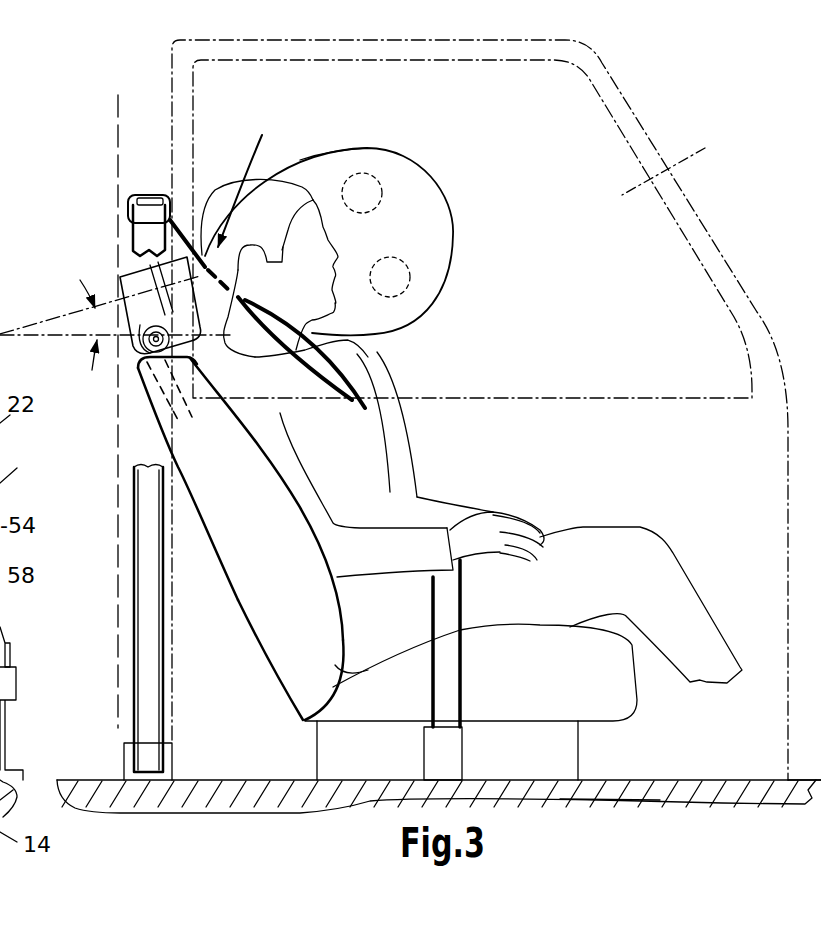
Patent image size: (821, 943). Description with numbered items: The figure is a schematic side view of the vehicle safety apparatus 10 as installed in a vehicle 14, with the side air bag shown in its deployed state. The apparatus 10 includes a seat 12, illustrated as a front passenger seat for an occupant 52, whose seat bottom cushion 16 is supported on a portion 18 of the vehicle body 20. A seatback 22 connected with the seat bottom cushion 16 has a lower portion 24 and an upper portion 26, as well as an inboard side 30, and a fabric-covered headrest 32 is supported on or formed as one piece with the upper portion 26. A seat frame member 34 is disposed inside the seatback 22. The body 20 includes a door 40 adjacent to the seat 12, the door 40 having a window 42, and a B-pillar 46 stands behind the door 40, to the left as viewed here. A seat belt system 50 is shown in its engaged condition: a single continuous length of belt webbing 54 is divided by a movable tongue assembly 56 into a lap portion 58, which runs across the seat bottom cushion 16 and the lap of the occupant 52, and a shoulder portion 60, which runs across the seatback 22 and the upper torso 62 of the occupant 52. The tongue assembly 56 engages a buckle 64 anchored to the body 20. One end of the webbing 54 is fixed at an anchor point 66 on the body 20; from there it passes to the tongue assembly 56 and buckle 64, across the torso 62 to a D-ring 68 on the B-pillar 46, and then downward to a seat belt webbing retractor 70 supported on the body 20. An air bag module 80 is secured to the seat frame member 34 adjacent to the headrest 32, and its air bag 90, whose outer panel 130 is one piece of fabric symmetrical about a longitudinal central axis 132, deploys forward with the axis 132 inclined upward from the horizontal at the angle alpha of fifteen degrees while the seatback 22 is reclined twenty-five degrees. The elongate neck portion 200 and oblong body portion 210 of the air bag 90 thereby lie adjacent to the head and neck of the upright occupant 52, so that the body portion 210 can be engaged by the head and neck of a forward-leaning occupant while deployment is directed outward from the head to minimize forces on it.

The vehicle safety apparatus 10 is at (642, 457).
The seat 12 is at (260, 632).
The vehicle 14 is at (715, 775).
The seat bottom cushion 16 is at (637, 683).
The portion of the vehicle body 18 is at (640, 780).
The vehicle body 20 is at (612, 812).
The seatback 22 is at (238, 600).
The lower portion of the seatback 24 is at (305, 670).
The upper portion of the seatback 26 is at (220, 433).
The inboard side of the seatback 30 is at (16, 463).
The headrest 32 is at (133, 260).
The seat frame member 34 is at (150, 364).
The door 40 is at (640, 116).
The window 42 is at (681, 162).
The B-pillar 46 is at (110, 112).
The seat belt system 50 is at (132, 590).
The occupant 52 is at (415, 442).
The belt webbing 54 is at (148, 525).
The tongue assembly 56 is at (10, 660).
The lap portion 58 is at (452, 600).
The shoulder portion 60 is at (320, 381).
The upper torso 62 is at (345, 480).
The buckle 64 is at (14, 686).
The anchor point 66 is at (448, 756).
The D-ring 68 is at (130, 208).
The seat belt webbing retractor 70 is at (123, 762).
The air bag module 80 is at (116, 273).
The air bag 90 is at (450, 196).
The outer panel 130 is at (330, 167).
The longitudinal central axis 132 is at (66, 313).
The elongate neck portion 200 is at (252, 178).
The body portion 210 is at (462, 251).